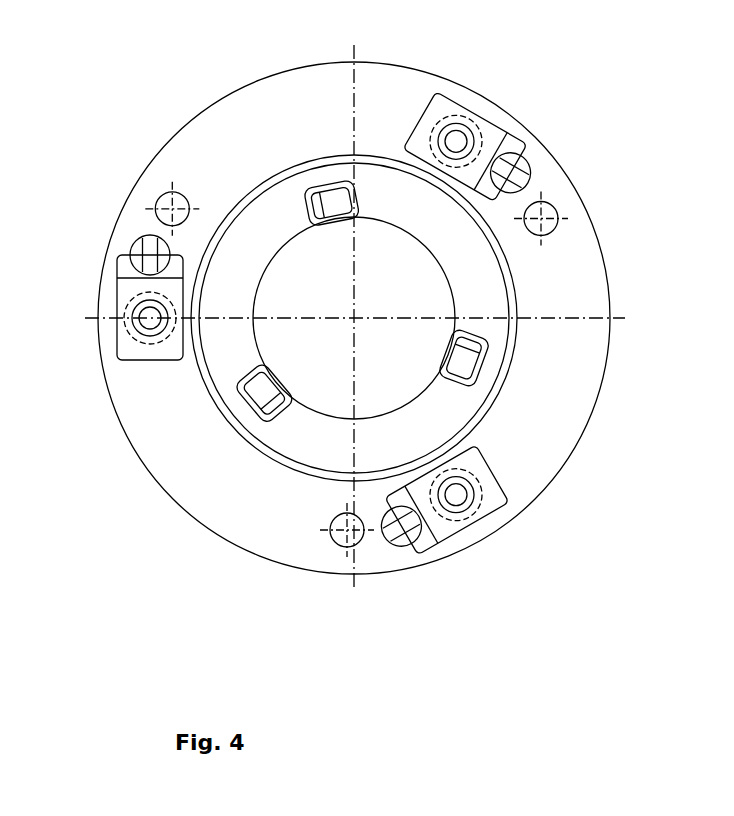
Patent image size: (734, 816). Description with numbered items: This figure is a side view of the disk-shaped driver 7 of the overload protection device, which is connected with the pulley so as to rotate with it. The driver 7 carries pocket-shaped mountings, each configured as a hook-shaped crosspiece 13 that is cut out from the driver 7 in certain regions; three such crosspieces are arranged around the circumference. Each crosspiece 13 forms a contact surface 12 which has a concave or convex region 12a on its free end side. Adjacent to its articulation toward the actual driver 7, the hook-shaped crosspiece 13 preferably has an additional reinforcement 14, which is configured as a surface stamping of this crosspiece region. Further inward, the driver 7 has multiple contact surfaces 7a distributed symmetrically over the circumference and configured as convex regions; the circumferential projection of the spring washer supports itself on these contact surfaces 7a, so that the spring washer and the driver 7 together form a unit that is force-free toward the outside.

The driver 7 is at (470, 262).
The contact surface 7a is at (352, 203).
The contact surface 12 is at (323, 338).
The concave or convex region 12a is at (457, 138).
The hook-shaped crosspiece 13 is at (463, 180).
The reinforcement 14 is at (522, 163).